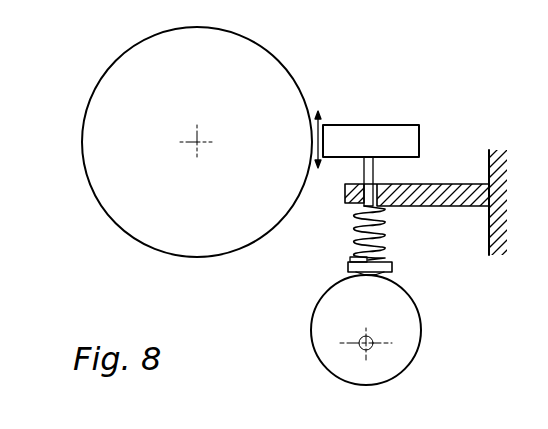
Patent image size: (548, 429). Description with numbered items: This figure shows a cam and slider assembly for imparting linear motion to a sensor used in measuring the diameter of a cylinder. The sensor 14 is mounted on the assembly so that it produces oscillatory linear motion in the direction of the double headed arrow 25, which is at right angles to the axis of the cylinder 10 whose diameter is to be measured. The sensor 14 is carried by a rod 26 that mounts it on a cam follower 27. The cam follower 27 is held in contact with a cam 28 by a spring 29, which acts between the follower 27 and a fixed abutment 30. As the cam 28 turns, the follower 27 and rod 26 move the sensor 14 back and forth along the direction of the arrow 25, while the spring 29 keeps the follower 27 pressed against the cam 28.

The cylinder 10 is at (95, 98).
The sensor 14 is at (398, 125).
The double headed arrow 25 is at (323, 133).
The rod 26 is at (372, 173).
The cam follower 27 is at (392, 268).
The cam 28 is at (311, 336).
The spring 29 is at (354, 234).
The fixed abutment 30 is at (452, 184).